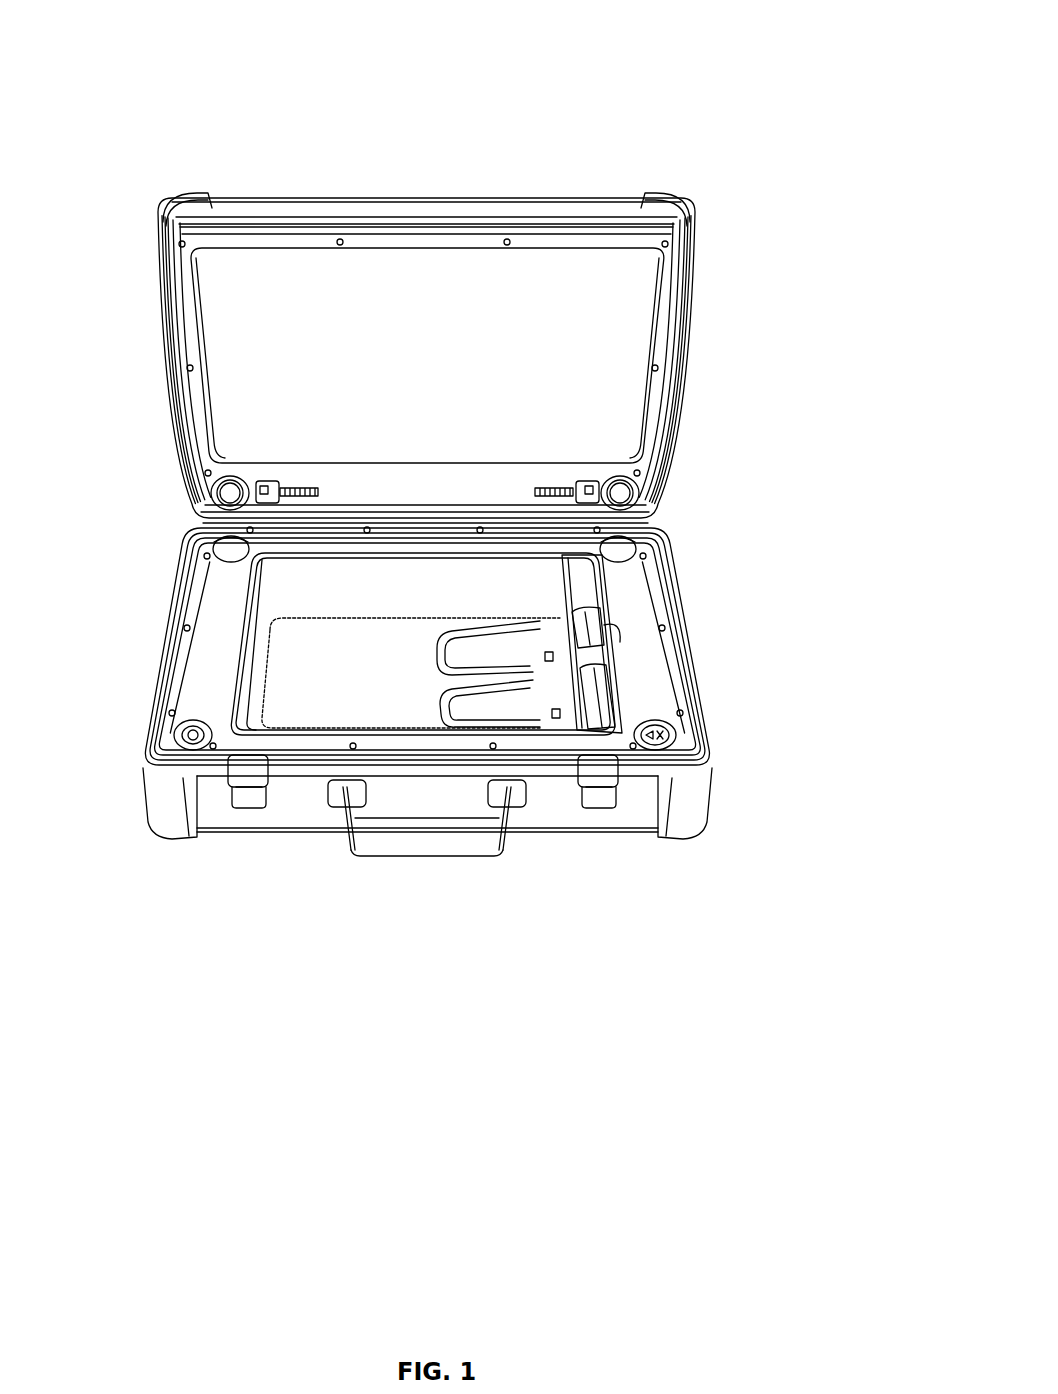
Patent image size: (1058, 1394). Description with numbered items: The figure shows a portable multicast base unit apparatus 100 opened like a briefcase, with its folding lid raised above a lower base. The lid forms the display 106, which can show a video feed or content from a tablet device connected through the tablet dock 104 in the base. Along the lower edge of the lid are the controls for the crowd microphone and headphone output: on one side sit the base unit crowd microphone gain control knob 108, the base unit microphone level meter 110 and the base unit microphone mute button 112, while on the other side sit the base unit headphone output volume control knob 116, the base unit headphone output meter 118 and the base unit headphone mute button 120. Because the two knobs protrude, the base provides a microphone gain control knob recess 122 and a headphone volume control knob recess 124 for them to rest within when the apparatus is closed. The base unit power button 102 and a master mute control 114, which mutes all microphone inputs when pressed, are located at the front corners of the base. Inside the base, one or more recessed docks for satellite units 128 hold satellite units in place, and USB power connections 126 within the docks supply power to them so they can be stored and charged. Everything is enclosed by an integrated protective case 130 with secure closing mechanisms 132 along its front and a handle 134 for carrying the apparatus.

The portable multicast base unit apparatus 100 is at (832, 62).
The base unit power button 102 is at (175, 733).
The tablet dock 104 is at (245, 630).
The display 106 is at (446, 379).
The base unit crowd microphone gain control knob 108 is at (647, 497).
The base unit microphone level meter 110 is at (548, 487).
The base unit microphone mute button 112 is at (588, 485).
The master mute control 114 is at (673, 733).
The base unit headphone output volume control knob 116 is at (212, 495).
The base unit headphone output meter 118 is at (296, 487).
The base unit headphone mute button 120 is at (262, 485).
The microphone gain control knob recess 122 is at (640, 543).
The headphone volume control knob recess 124 is at (210, 545).
The USB power connections 126 is at (560, 712).
The recessed docks for satellite units 128 is at (437, 650).
The protective case 130 is at (690, 832).
The secure closing mechanism 132 is at (250, 807).
The handle 134 is at (438, 856).